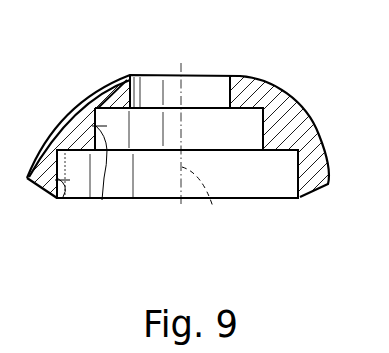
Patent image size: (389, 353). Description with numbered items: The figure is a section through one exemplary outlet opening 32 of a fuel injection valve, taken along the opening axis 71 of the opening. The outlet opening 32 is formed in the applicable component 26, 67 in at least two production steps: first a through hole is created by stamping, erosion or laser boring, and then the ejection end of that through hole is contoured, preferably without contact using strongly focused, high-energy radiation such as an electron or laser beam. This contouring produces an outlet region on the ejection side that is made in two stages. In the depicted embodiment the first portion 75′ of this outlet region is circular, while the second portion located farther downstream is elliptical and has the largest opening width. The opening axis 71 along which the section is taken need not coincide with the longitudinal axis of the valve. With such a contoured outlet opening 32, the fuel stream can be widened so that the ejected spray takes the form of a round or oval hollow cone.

The component 26 is at (297, 122).
The component 67 is at (194, 110).
The outlet opening 32 is at (152, 90).
The opening axis 71 is at (213, 207).
The first portion 75′ is at (102, 200).